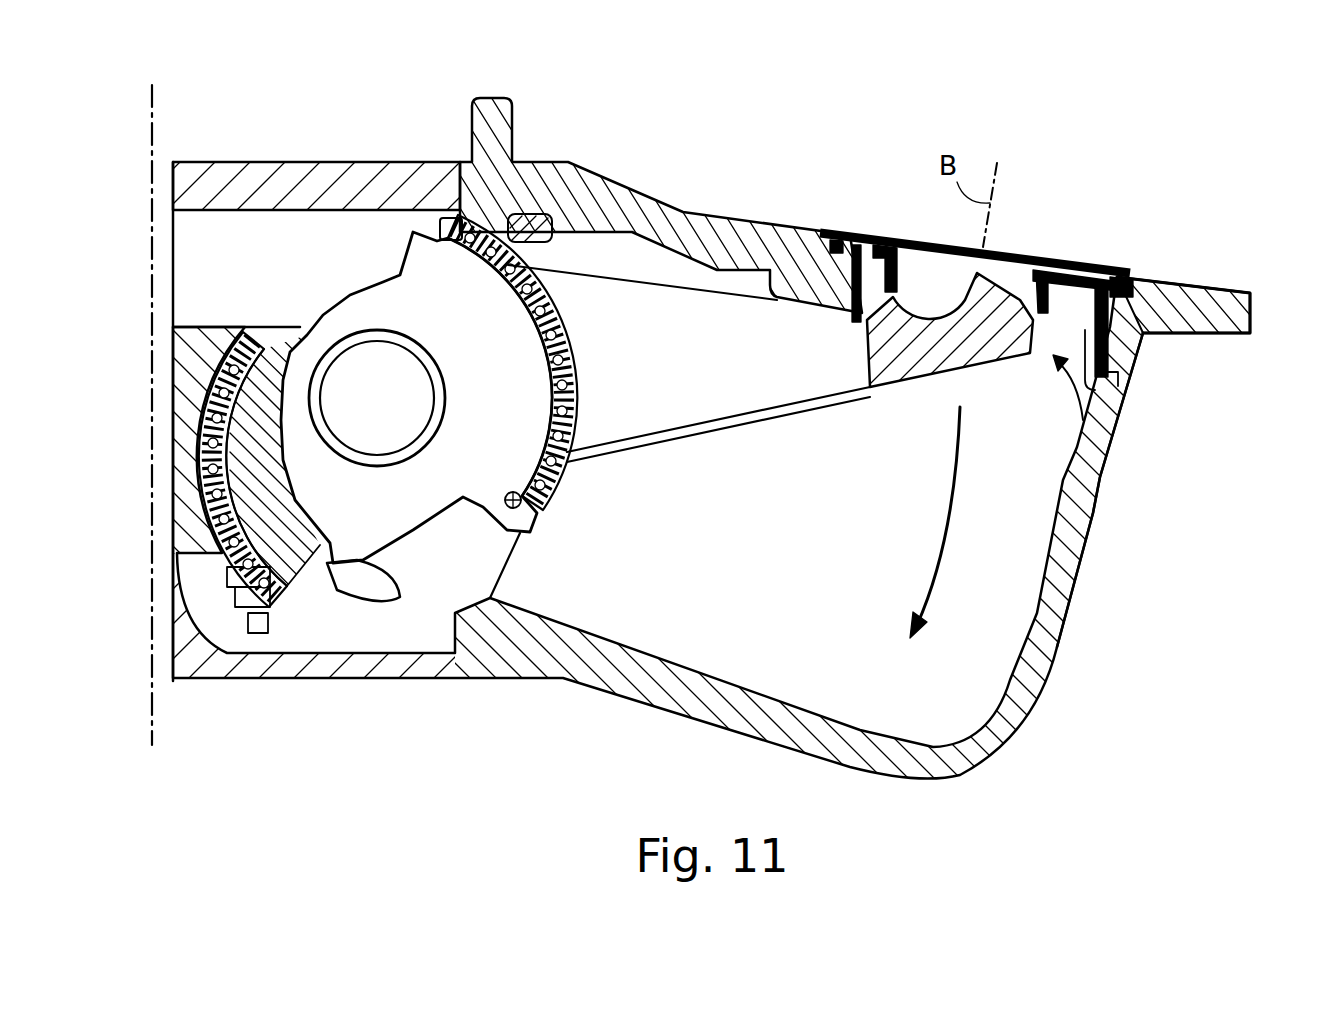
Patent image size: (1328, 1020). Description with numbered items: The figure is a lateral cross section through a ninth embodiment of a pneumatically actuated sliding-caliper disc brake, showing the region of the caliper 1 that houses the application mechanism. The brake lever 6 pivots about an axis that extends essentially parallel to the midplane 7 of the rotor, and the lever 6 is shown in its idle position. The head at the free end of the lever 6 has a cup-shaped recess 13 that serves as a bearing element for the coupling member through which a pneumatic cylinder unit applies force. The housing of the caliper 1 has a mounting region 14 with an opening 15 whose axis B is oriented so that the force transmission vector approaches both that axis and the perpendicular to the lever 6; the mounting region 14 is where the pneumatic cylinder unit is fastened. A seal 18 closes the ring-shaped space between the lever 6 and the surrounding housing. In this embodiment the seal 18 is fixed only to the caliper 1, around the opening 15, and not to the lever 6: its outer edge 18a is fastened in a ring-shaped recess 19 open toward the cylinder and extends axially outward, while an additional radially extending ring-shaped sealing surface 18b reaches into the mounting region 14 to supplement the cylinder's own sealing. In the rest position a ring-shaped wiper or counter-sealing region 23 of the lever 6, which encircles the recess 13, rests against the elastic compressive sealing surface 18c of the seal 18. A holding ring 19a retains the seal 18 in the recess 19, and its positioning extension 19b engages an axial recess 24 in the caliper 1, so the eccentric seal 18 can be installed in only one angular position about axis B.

The midplane 7 is at (150, 113).
The caliper 1 is at (697, 240).
The lever 6 is at (657, 337).
The ring-shaped recess 19 is at (835, 310).
The seal 18 is at (1056, 248).
The outer edge 18a is at (870, 250).
The ring-shaped sealing surface 18b is at (880, 245).
The compressive sealing surface 18c is at (850, 330).
The mounting region 14 is at (1135, 280).
The recess 13 is at (1040, 375).
The counter-sealing region 23 is at (1090, 467).
The opening 15 is at (1107, 437).
The axial recess 24 is at (1110, 381).
The holding ring 19a is at (1178, 298).
The positioning extension 19b is at (1107, 353).